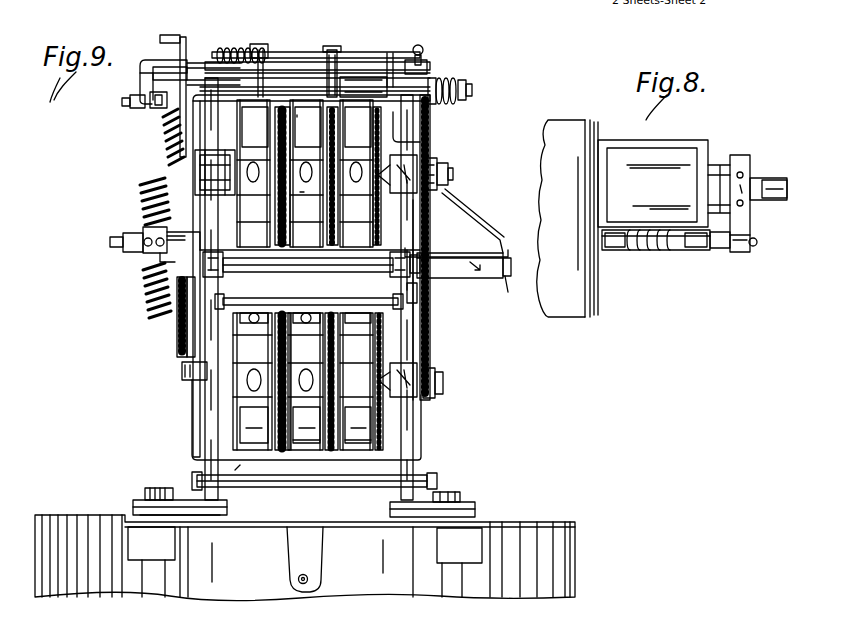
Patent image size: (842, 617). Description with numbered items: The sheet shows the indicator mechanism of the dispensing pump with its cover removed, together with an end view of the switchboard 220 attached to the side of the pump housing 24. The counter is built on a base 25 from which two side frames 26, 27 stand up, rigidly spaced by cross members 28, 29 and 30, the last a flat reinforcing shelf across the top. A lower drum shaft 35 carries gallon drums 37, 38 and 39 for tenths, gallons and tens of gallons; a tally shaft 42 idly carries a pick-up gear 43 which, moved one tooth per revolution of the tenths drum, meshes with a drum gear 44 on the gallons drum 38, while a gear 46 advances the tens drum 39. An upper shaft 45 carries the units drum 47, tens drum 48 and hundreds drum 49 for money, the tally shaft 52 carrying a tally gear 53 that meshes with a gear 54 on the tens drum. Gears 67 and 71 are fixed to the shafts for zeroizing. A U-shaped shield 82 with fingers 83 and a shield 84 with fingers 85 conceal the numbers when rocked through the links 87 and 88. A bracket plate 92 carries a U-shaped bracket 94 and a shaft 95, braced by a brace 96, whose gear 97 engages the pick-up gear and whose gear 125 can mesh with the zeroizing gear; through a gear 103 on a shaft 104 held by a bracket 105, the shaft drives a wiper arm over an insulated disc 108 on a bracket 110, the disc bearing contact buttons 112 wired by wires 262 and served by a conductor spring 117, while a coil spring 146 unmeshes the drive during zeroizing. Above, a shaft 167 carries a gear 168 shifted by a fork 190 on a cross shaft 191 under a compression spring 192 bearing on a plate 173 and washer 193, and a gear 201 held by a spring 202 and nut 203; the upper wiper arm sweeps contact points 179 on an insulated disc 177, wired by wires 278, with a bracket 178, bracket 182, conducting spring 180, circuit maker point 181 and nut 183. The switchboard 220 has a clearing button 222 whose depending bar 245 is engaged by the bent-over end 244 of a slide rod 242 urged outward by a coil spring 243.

In FIG. 9, the base 25 is at (543, 533).
In FIG. 9, the side frame 26 is at (205, 463).
In FIG. 9, the side frame 27 is at (413, 467).
In FIG. 9, the shield 82 is at (192, 447).
In FIG. 9, the gear 67 is at (430, 437).
In FIG. 9, the cross member 30 is at (270, 87).
In FIG. 9, the tally shaft 52 is at (292, 92).
In FIG. 9, the compression spring 192 is at (245, 50).
In FIG. 9, the plate 173 is at (447, 52).
In FIG. 9, the shifter fork 190 is at (330, 53).
In FIG. 9, the gear 168 is at (340, 78).
In FIG. 9, the cross shaft 191 is at (403, 52).
In FIG. 9, the gear 201 is at (370, 157).
In FIG. 9, the spring 202 is at (455, 75).
In FIG. 9, the nut 203 is at (466, 85).
In FIG. 9, the shaft 167 is at (468, 95).
In FIG. 9, the wire 278 is at (160, 35).
In FIG. 9, the bracket 178 is at (160, 53).
In FIG. 9, the contact points 179 is at (187, 50).
In FIG. 9, the washer 193 is at (140, 75).
In FIG. 9, the bracket 182 is at (150, 88).
In FIG. 9, the nut 183 is at (130, 108).
In FIG. 9, the circuit maker point 181 is at (147, 113).
In FIG. 9, the conducting spring 180 is at (163, 117).
In FIG. 9, the insulated disc 177 is at (175, 157).
In FIG. 9, the link 87 is at (173, 158).
In FIG. 9, the contact buttons 112 is at (147, 190).
In FIG. 9, the wire 262 is at (140, 220).
In FIG. 9, the conductor spring 117 is at (130, 233).
In FIG. 9, the bracket 110 is at (230, 227).
In FIG. 9, the gear 103 is at (160, 262).
In FIG. 9, the insulated disc 108 is at (157, 313).
In FIG. 9, the bracket plate 92 is at (200, 327).
In FIG. 9, the coil spring 146 is at (177, 340).
In FIG. 9, the link 88 is at (188, 367).
In FIG. 9, the hundreds drum 49 is at (240, 150).
In FIG. 9, the fingers 85 is at (240, 118).
In FIG. 9, the shaft 45 is at (448, 172).
In FIG. 9, the tens drum 48 is at (305, 147).
In FIG. 9, the tally gear 53 is at (305, 116).
In FIG. 9, the bracket 105 is at (308, 193).
In FIG. 9, the gear 54 is at (342, 126).
In FIG. 9, the units drum 47 is at (380, 160).
In FIG. 9, the shield 84 is at (427, 127).
In FIG. 9, the gear 97 is at (360, 252).
In FIG. 9, the shaft 104 is at (262, 255).
In FIG. 9, the cross member 29 is at (283, 275).
In FIG. 9, the drum 39 is at (243, 312).
In FIG. 9, the drum 38 is at (308, 312).
In FIG. 9, the drum 37 is at (365, 312).
In FIG. 9, the pick-up gear 43 is at (338, 300).
In FIG. 9, the tally shaft 42 is at (383, 315).
In FIG. 9, the drum shaft 35 is at (442, 377).
In FIG. 9, the gear 125 is at (425, 292).
In FIG. 9, the zeroizing gear 71 is at (428, 233).
In FIG. 9, the brace 96 is at (483, 223).
In FIG. 9, the U-shaped bracket 94 is at (478, 272).
In FIG. 9, the shaft 95 is at (508, 276).
In FIG. 9, the fingers 83 is at (257, 442).
In FIG. 9, the gear 46 is at (305, 442).
In FIG. 9, the drum gear 44 is at (333, 450).
In FIG. 9, the cross member 28 is at (280, 477).
In FIG. 8, the pump housing 24 is at (577, 303).
In FIG. 8, the switchboard 220 is at (697, 140).
In FIG. 8, the depending bar 245 is at (743, 227).
In FIG. 8, the button 222 is at (777, 178).
In FIG. 8, the coil spring 243 is at (663, 253).
In FIG. 8, the slide rod 242 is at (717, 252).
In FIG. 8, the bent-over end 244 is at (755, 246).